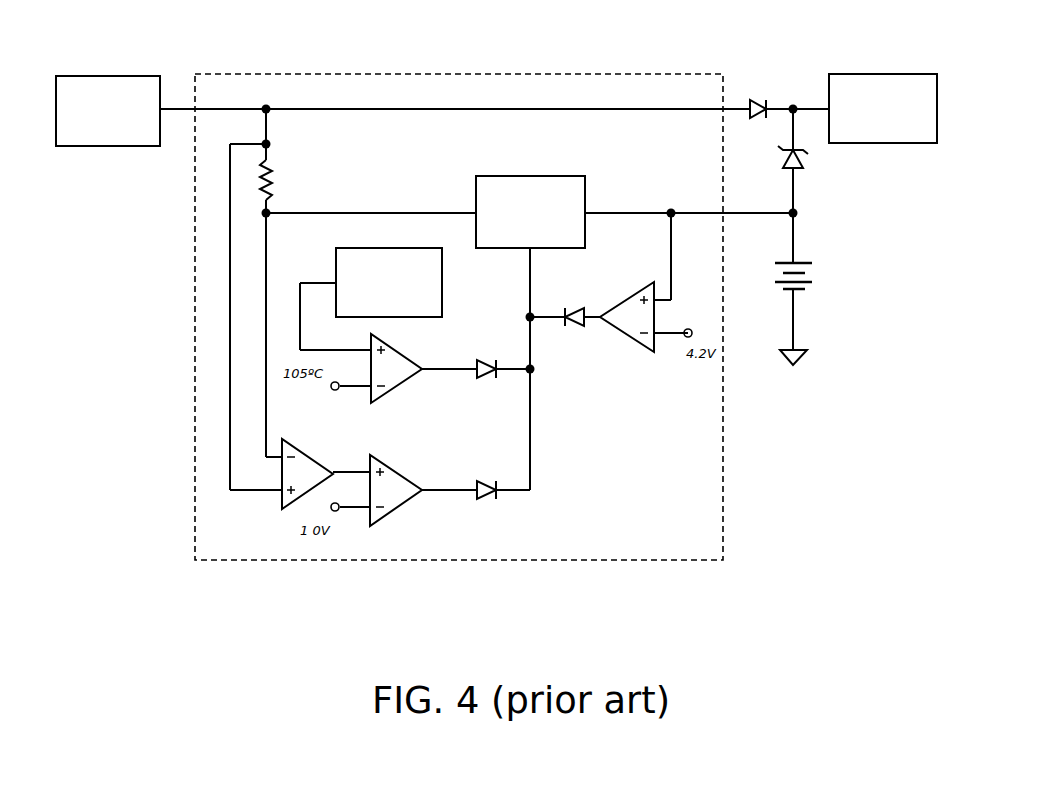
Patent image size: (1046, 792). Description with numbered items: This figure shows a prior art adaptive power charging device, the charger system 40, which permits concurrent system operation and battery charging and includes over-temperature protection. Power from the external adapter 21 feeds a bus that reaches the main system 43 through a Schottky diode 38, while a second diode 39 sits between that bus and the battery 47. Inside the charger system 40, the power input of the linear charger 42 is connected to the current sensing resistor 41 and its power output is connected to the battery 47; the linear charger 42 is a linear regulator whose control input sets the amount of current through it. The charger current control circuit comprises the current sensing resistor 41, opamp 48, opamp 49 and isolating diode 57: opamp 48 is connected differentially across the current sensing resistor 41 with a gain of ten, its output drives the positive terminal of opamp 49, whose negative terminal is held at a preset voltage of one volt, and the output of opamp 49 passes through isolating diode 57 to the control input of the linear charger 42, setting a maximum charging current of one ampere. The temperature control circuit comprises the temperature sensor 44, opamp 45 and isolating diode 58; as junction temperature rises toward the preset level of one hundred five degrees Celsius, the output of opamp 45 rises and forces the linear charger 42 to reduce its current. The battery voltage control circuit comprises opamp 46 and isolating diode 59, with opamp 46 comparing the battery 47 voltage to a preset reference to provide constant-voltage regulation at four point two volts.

The external adapter 21 is at (128, 76).
The diode 38 is at (752, 100).
The zener diode 39 is at (804, 162).
The charger system 40 is at (244, 541).
The current sensing resistor 41 is at (276, 182).
The linear charger 42 is at (530, 176).
The system 43 is at (885, 74).
The temperature sensor 44 is at (390, 248).
The opamp 45 is at (395, 344).
The opamp 46 is at (622, 298).
The battery 47 is at (814, 272).
The opamp 48 is at (300, 447).
The opamp 49 is at (395, 465).
The isolating diode 57 is at (484, 496).
The isolating diode 58 is at (484, 375).
The isolating diode 59 is at (582, 324).